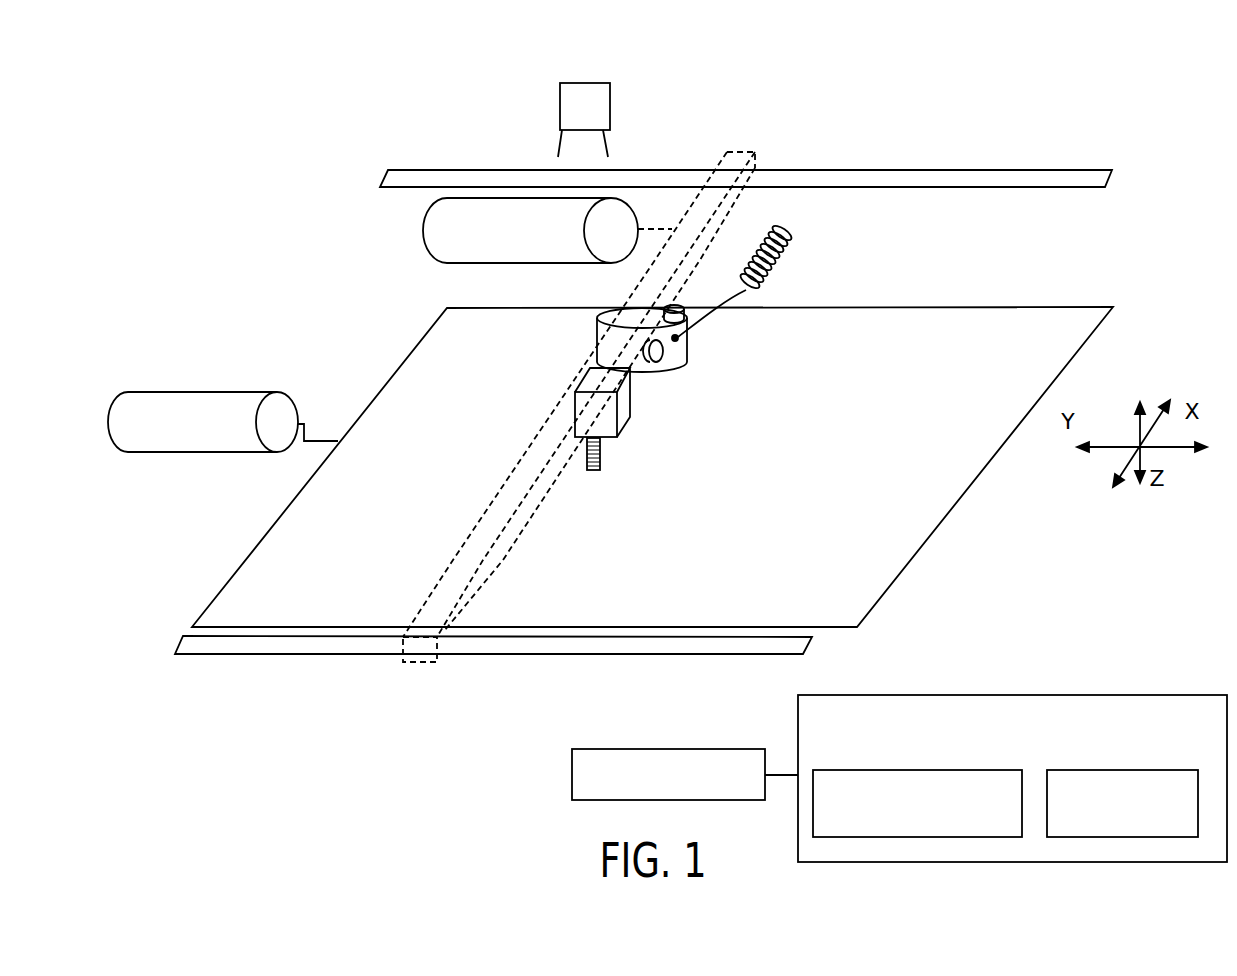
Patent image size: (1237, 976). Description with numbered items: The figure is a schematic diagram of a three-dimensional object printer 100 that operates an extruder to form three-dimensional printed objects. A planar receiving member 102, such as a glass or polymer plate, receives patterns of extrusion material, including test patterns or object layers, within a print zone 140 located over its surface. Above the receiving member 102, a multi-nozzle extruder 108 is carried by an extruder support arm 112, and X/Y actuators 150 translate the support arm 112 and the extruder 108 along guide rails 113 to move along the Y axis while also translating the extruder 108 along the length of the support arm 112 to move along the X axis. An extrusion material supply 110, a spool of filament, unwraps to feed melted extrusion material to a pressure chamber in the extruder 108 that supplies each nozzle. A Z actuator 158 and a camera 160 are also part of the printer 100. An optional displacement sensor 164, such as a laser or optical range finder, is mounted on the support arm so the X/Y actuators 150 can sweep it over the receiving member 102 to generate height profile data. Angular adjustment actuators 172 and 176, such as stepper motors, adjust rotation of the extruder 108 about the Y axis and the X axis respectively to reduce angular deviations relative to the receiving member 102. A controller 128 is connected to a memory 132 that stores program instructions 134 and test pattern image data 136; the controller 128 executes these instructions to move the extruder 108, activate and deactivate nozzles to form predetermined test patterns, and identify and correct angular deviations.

The three-dimensional object printer 100 is at (244, 206).
The receiving member 102 is at (837, 628).
The multi-nozzle extruder 108 is at (687, 352).
The extrusion material supply 110 is at (788, 250).
The extruder support arm 112 is at (712, 166).
The guide rails 113 is at (893, 168).
The controller 128 is at (663, 748).
The memory 132 is at (1045, 695).
The programmed instruction data 134 is at (920, 768).
The test pattern image data 136 is at (1165, 768).
The print zone 140 is at (396, 338).
The X/Y actuators 150 is at (537, 265).
The Z actuator 158 is at (237, 390).
The camera 160 is at (560, 110).
The displacement sensor 164 is at (625, 420).
The extruder angular adjustment actuator 172 is at (653, 366).
The extruder angular adjustment actuator 176 is at (685, 321).